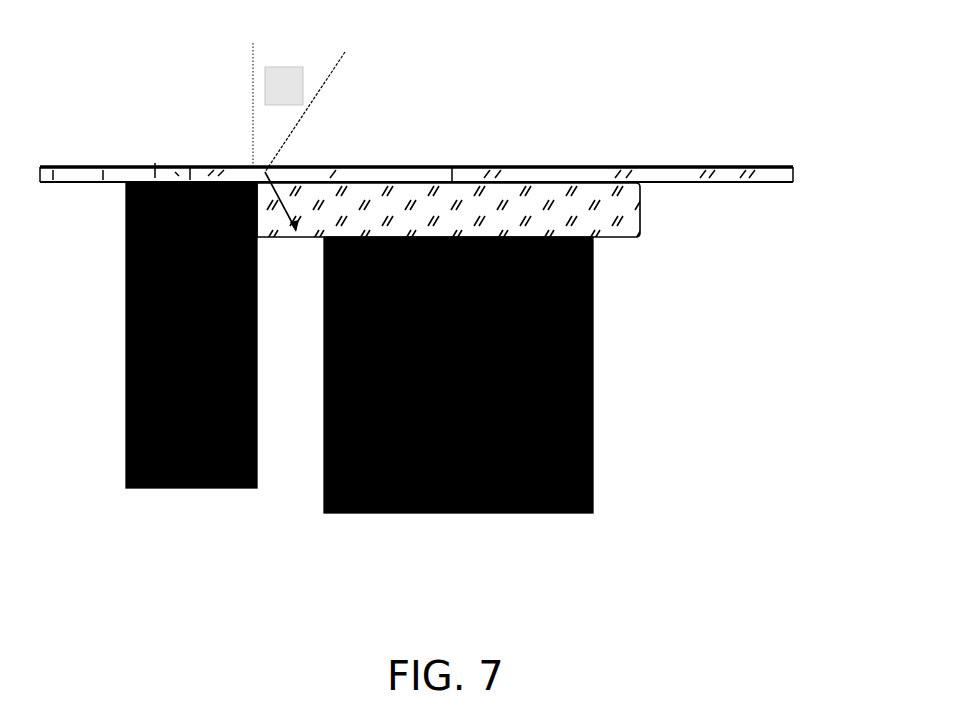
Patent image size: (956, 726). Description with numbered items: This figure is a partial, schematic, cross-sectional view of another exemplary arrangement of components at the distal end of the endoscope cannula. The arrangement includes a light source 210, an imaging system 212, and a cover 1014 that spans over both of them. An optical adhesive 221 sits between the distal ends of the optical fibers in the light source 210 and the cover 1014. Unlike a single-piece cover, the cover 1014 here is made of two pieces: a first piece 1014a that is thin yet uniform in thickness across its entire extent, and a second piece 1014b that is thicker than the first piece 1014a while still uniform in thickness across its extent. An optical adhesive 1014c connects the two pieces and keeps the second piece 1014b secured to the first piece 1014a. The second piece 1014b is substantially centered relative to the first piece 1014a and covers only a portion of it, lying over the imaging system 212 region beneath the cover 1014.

The optical adhesive 221 is at (208, 167).
The cover 1014 is at (448, 123).
The first piece 1014a is at (857, 108).
The second piece 1014b is at (643, 217).
The optical adhesive 1014c is at (478, 182).
The light source 210 is at (110, 430).
The imaging system 212 is at (598, 435).